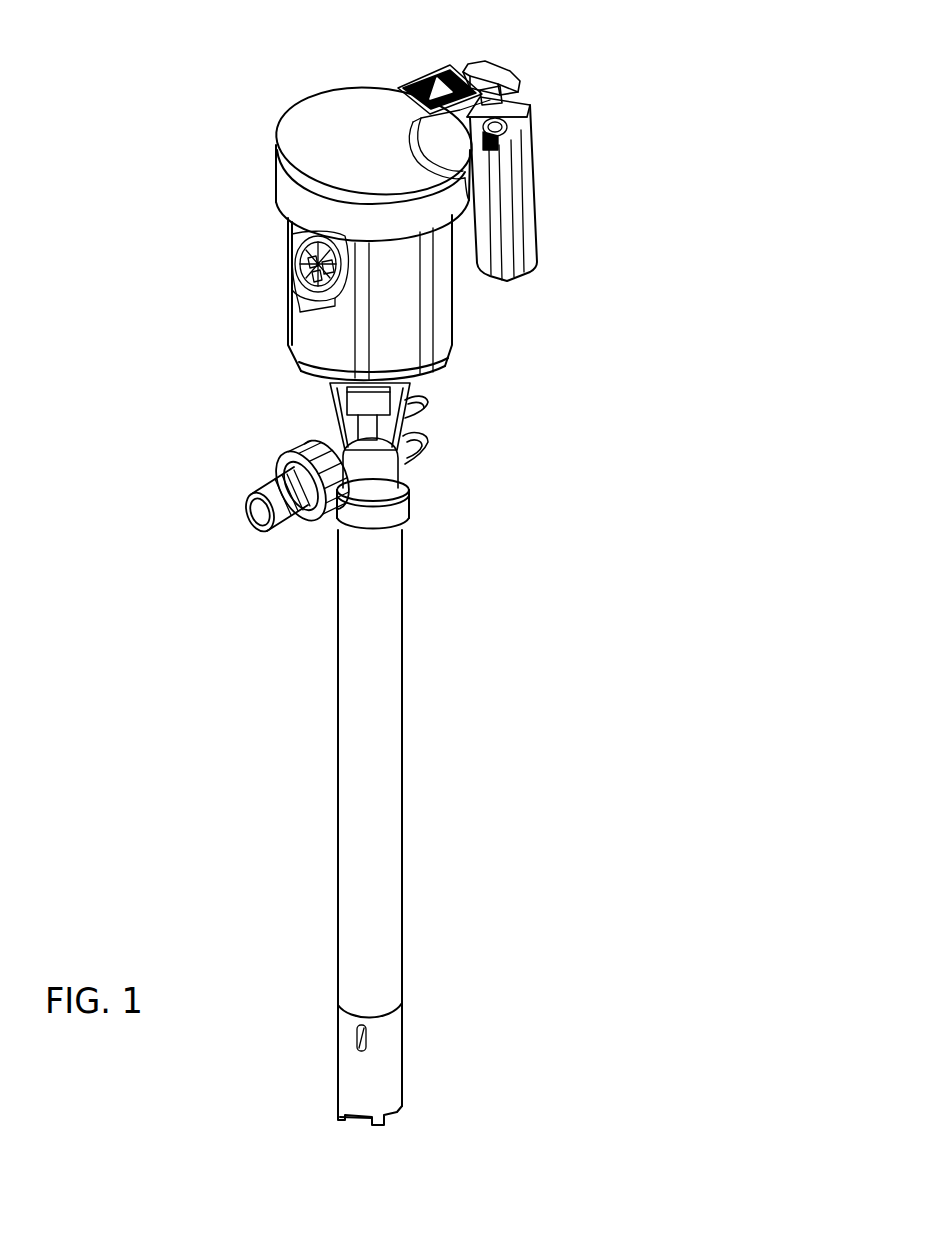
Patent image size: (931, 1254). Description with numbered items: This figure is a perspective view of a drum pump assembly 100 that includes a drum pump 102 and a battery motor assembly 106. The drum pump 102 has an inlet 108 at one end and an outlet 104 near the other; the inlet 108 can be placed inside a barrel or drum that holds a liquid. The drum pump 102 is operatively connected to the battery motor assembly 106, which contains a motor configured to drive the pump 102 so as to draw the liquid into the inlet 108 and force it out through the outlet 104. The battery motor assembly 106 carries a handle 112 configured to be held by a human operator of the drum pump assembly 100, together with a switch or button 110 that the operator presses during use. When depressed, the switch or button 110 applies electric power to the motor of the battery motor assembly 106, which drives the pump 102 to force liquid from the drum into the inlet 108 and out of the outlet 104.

The drum pump assembly 100 is at (513, 490).
The drum pump 102 is at (402, 597).
The outlet 104 is at (248, 502).
The battery motor assembly 106 is at (282, 123).
The inlet 108 is at (373, 1123).
The switch or button 110 is at (495, 67).
The handle 112 is at (540, 202).